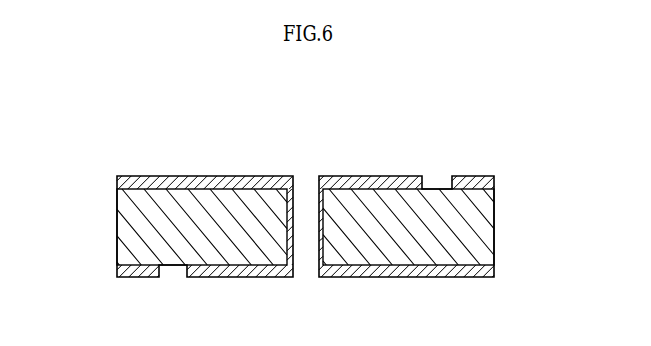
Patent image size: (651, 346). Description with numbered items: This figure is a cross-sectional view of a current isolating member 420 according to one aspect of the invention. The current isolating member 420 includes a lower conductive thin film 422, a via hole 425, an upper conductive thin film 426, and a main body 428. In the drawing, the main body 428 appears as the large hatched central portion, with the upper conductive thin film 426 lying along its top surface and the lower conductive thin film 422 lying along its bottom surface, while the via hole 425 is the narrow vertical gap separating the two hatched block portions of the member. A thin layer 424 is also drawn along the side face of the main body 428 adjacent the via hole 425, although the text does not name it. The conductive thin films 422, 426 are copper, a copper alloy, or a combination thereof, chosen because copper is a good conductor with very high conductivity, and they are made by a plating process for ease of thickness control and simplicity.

The current isolating member 420 is at (118, 147).
The lower conductive thin film 422 is at (413, 273).
The side layer 424 is at (321, 262).
The via hole 425 is at (306, 180).
The upper conductive thin film 426 is at (378, 181).
The main body 428 is at (483, 228).